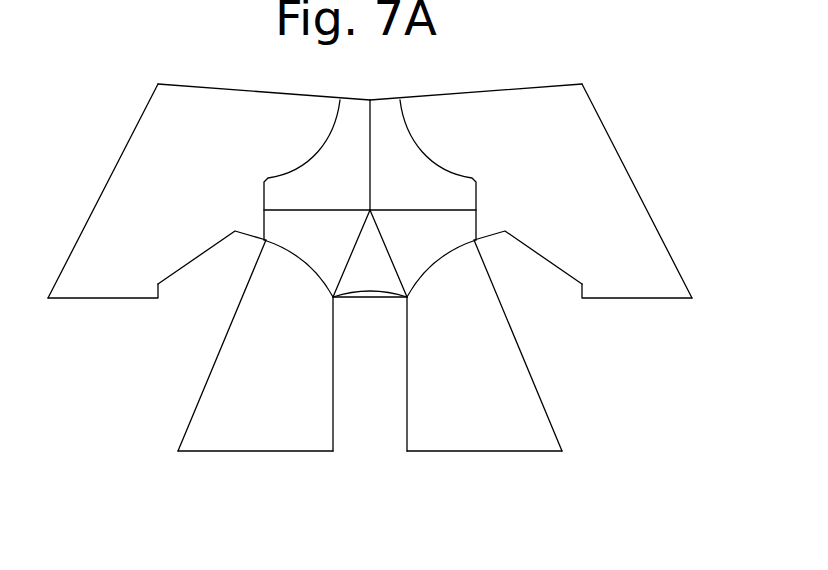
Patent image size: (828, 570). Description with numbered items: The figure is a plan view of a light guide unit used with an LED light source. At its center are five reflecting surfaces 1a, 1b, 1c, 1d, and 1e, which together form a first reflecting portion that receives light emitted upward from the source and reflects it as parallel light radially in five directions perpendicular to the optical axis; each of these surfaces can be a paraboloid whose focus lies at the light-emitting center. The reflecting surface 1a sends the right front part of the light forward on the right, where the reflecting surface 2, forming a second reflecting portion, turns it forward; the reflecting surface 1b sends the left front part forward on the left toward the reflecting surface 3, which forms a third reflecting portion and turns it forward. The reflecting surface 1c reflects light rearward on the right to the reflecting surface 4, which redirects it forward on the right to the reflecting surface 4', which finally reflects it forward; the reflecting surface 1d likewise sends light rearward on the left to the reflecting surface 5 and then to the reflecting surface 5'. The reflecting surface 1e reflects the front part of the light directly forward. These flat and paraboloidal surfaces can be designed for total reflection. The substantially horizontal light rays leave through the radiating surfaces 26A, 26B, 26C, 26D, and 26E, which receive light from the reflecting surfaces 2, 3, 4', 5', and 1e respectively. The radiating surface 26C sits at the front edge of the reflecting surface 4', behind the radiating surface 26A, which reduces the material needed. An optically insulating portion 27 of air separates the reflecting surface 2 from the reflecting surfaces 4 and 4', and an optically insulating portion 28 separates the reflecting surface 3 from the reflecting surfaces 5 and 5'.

The reflecting surface 1a is at (433, 256).
The reflecting surface 1b is at (306, 256).
The reflecting surface 1c is at (430, 197).
The reflecting surface 1d is at (308, 197).
The reflecting surface 1e is at (370, 253).
The reflecting surface 2 is at (529, 379).
The reflecting surface 3 is at (211, 380).
The reflecting surface 4 is at (476, 73).
The reflecting surface 4' is at (659, 191).
The reflecting surface 5 is at (264, 73).
The reflecting surface 5' is at (80, 191).
The radiating surface 26A is at (512, 452).
The radiating surface 26B is at (228, 452).
The radiating surface 26C is at (635, 298).
The radiating surface 26D is at (105, 299).
The radiating surface 26E is at (370, 297).
The optically insulating portion 27 is at (572, 323).
The optically insulating portion 28 is at (165, 325).